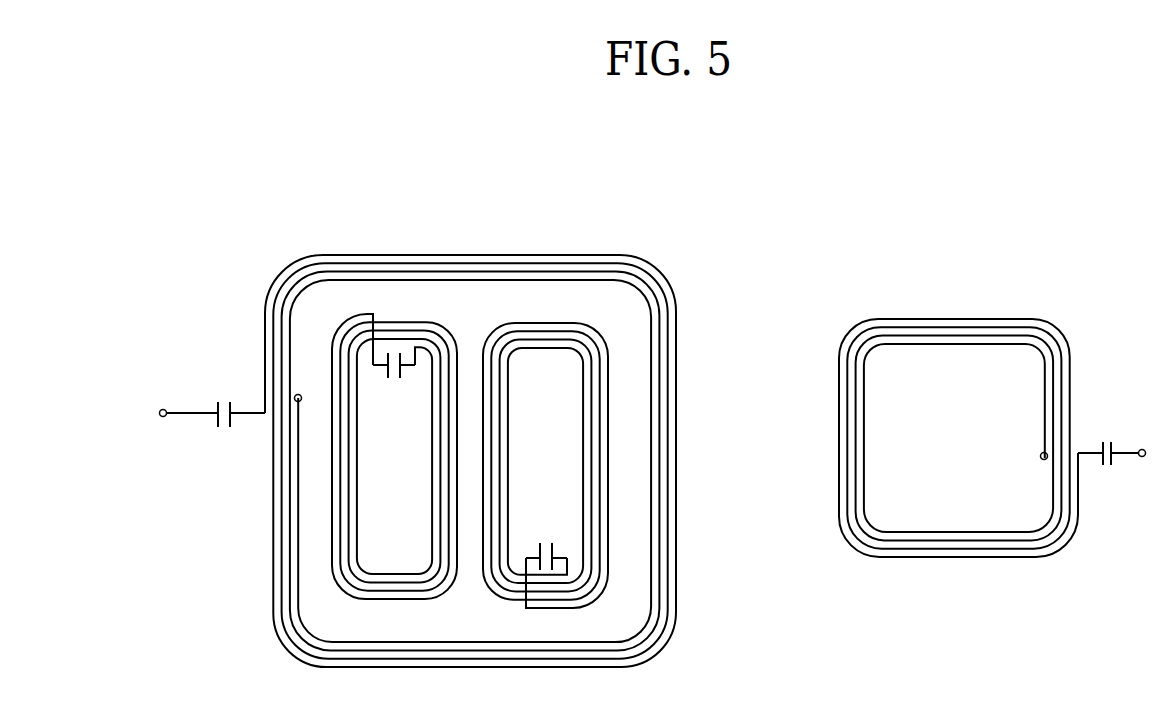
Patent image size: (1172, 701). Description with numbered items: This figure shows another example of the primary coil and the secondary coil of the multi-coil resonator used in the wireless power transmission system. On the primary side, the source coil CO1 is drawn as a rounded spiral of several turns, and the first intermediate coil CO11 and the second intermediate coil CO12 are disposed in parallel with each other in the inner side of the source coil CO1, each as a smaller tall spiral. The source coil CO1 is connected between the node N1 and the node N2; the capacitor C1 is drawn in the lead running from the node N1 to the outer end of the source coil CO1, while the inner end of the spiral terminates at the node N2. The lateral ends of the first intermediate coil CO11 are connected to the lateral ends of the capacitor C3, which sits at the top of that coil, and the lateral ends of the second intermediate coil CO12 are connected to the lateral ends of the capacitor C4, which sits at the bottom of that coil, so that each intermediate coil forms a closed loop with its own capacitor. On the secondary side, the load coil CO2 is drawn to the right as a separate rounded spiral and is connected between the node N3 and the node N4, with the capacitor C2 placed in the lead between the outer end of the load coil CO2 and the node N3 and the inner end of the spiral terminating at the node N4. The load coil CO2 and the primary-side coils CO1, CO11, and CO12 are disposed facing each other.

The source coil CO1 is at (392, 255).
The first intermediate coil CO11 is at (438, 314).
The second intermediate coil CO12 is at (592, 323).
The load coil CO2 is at (955, 319).
The capacitor C1 is at (216, 399).
The capacitor C2 is at (1108, 442).
The capacitor C3 is at (394, 381).
The capacitor C4 is at (546, 543).
The node N1 is at (148, 414).
The node N2 is at (313, 399).
The node N3 is at (1155, 457).
The node N4 is at (1031, 457).